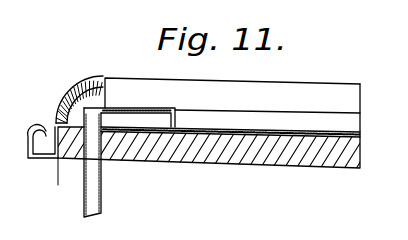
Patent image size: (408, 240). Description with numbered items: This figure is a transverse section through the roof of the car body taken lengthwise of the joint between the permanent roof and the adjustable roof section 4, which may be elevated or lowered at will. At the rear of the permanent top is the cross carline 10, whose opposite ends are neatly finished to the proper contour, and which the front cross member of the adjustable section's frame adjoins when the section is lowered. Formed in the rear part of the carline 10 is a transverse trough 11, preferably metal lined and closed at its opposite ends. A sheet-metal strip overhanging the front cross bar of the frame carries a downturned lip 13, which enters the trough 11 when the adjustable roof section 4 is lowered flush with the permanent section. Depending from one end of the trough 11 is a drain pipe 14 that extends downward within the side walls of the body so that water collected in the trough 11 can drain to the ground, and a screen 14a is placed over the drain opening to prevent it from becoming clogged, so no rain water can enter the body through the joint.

The adjustable roof section 4 is at (100, 72).
The cross carline 10 is at (278, 152).
The transverse trough 11 is at (312, 122).
The downturned lip 13 is at (257, 97).
The drain pipe 14 is at (92, 195).
The screen 14a is at (129, 108).